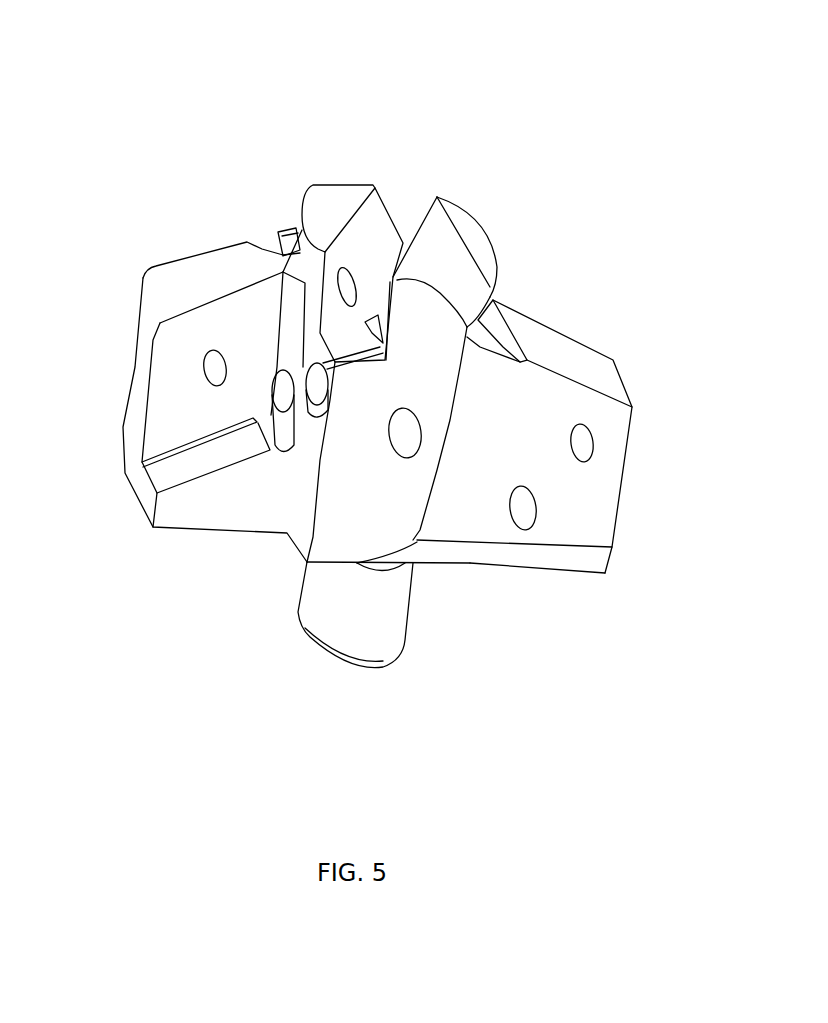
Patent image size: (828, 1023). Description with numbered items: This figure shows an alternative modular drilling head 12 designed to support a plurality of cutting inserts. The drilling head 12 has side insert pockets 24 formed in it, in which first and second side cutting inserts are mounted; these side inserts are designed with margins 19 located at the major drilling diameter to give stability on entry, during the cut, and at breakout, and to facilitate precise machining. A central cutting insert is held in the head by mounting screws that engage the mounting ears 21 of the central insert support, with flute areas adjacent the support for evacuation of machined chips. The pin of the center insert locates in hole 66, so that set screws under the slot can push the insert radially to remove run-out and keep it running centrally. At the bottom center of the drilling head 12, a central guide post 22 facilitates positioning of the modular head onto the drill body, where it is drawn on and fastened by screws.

The drilling head 12 is at (548, 283).
The margins 19 is at (355, 488).
The mounting ears 21 is at (438, 253).
The central guide post 22 is at (410, 613).
The side insert pockets 24 is at (180, 353).
The hole 66 is at (385, 335).